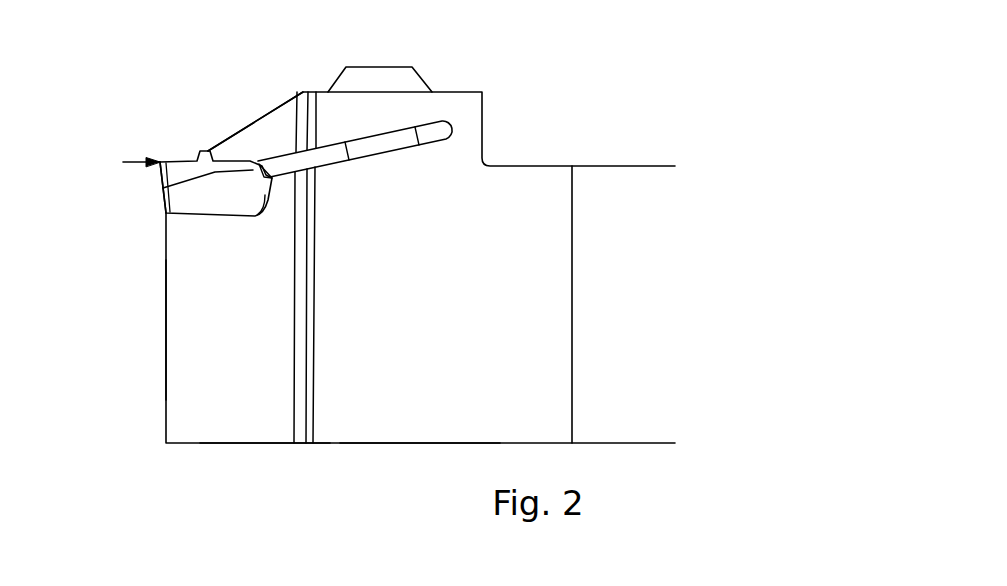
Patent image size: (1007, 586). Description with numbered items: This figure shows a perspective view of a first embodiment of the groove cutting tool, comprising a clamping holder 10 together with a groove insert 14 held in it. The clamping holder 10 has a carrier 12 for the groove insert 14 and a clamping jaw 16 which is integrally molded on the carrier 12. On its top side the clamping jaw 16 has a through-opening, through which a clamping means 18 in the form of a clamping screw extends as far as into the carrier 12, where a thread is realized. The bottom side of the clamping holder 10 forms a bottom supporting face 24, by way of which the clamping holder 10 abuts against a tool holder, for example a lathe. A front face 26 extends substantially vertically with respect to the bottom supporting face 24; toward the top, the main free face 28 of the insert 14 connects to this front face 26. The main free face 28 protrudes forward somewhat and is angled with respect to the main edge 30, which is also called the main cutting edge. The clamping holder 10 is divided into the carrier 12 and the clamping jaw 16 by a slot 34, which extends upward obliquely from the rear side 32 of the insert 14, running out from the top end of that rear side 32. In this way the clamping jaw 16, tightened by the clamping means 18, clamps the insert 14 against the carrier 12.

The clamping holder 10 is at (453, 340).
The carrier 12 is at (375, 423).
The groove insert 14 is at (192, 187).
The clamping jaw 16 is at (333, 117).
The clamping means 18 is at (397, 75).
The bottom supporting face 24 is at (270, 442).
The front face 26 is at (167, 328).
The main free face 28 is at (162, 190).
The main edge 30 is at (115, 165).
The rear side 32 is at (268, 185).
The slot 34 is at (292, 160).